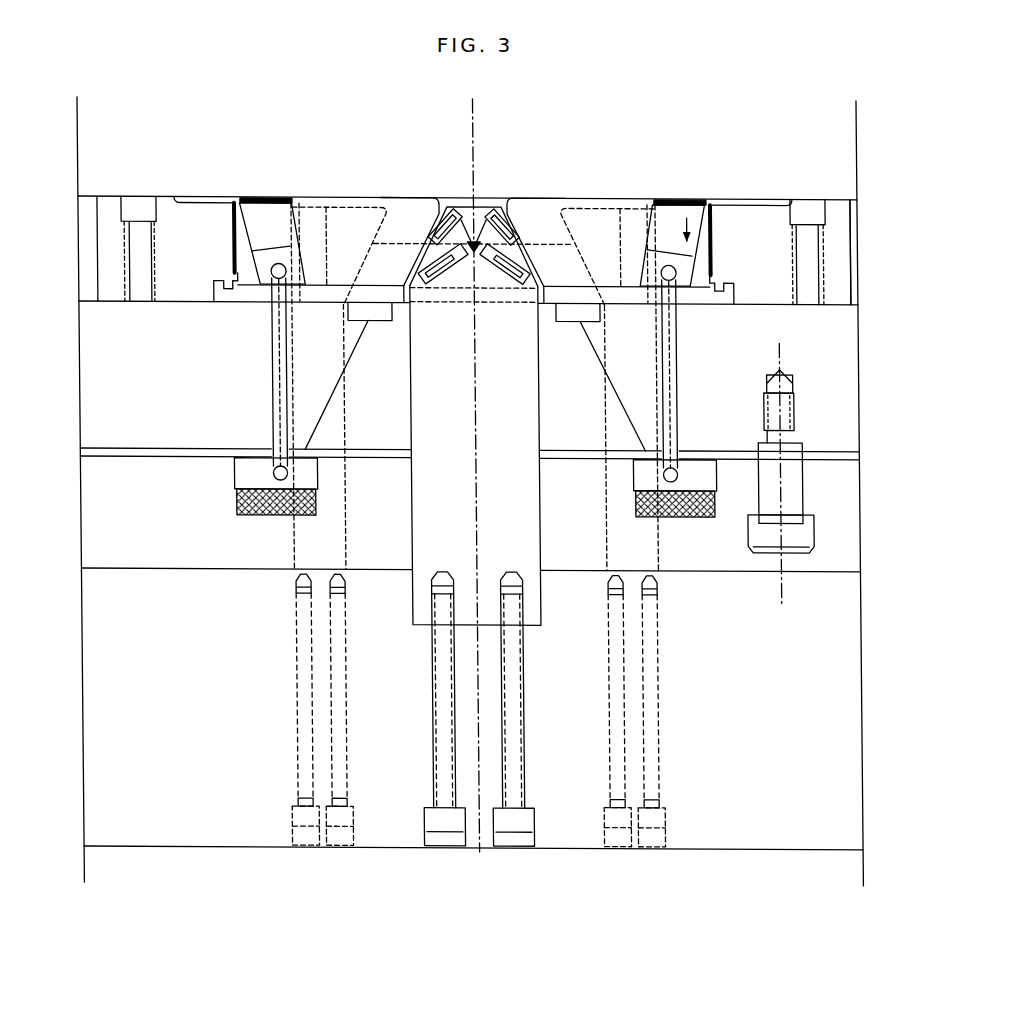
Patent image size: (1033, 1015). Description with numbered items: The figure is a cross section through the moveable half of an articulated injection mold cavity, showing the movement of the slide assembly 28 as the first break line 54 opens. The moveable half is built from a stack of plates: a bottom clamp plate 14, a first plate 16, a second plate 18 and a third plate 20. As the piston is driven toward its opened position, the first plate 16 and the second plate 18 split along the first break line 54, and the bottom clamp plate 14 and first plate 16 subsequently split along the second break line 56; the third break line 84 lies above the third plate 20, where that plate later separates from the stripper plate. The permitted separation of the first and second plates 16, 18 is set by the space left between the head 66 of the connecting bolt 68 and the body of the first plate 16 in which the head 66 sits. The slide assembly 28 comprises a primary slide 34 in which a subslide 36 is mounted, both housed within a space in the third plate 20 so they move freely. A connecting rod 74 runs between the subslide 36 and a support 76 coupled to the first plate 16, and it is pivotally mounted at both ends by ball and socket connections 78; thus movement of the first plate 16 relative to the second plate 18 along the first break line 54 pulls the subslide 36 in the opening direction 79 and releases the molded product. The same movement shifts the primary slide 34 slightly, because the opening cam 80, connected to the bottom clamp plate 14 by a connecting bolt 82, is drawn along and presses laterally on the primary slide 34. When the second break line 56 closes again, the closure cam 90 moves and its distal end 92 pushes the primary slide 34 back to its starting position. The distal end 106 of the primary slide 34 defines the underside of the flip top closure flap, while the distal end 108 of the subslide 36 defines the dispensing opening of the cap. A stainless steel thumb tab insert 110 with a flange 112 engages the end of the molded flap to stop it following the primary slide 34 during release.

The bottom clamp plate 14 is at (115, 791).
The first plate 16 is at (109, 529).
The second plate 18 is at (112, 388).
The third plate 20 is at (82, 262).
The slide assembly 28 is at (608, 193).
The primary slide 34 is at (544, 213).
The subslide 36 is at (674, 194).
The first break line 54 is at (858, 457).
The second break line 56 is at (859, 565).
The head of the connecting bolt 66 is at (788, 549).
The connecting bolt 68 is at (789, 498).
The connecting rod 74 is at (665, 402).
The support 76 is at (696, 480).
The ball and socket connections 78 is at (660, 280).
The opening direction 79 is at (714, 215).
The opening cam 80 is at (638, 525).
The connecting bolt 82 is at (649, 779).
The third break line 84 is at (858, 194).
The closure cam 90 is at (504, 535).
The distal end of the closure cam 92 is at (519, 215).
The distal end of primary slide 106 is at (714, 239).
The distal end of subslide 108 is at (687, 195).
The thumb tab insert 110 is at (708, 280).
The flange 112 is at (688, 280).